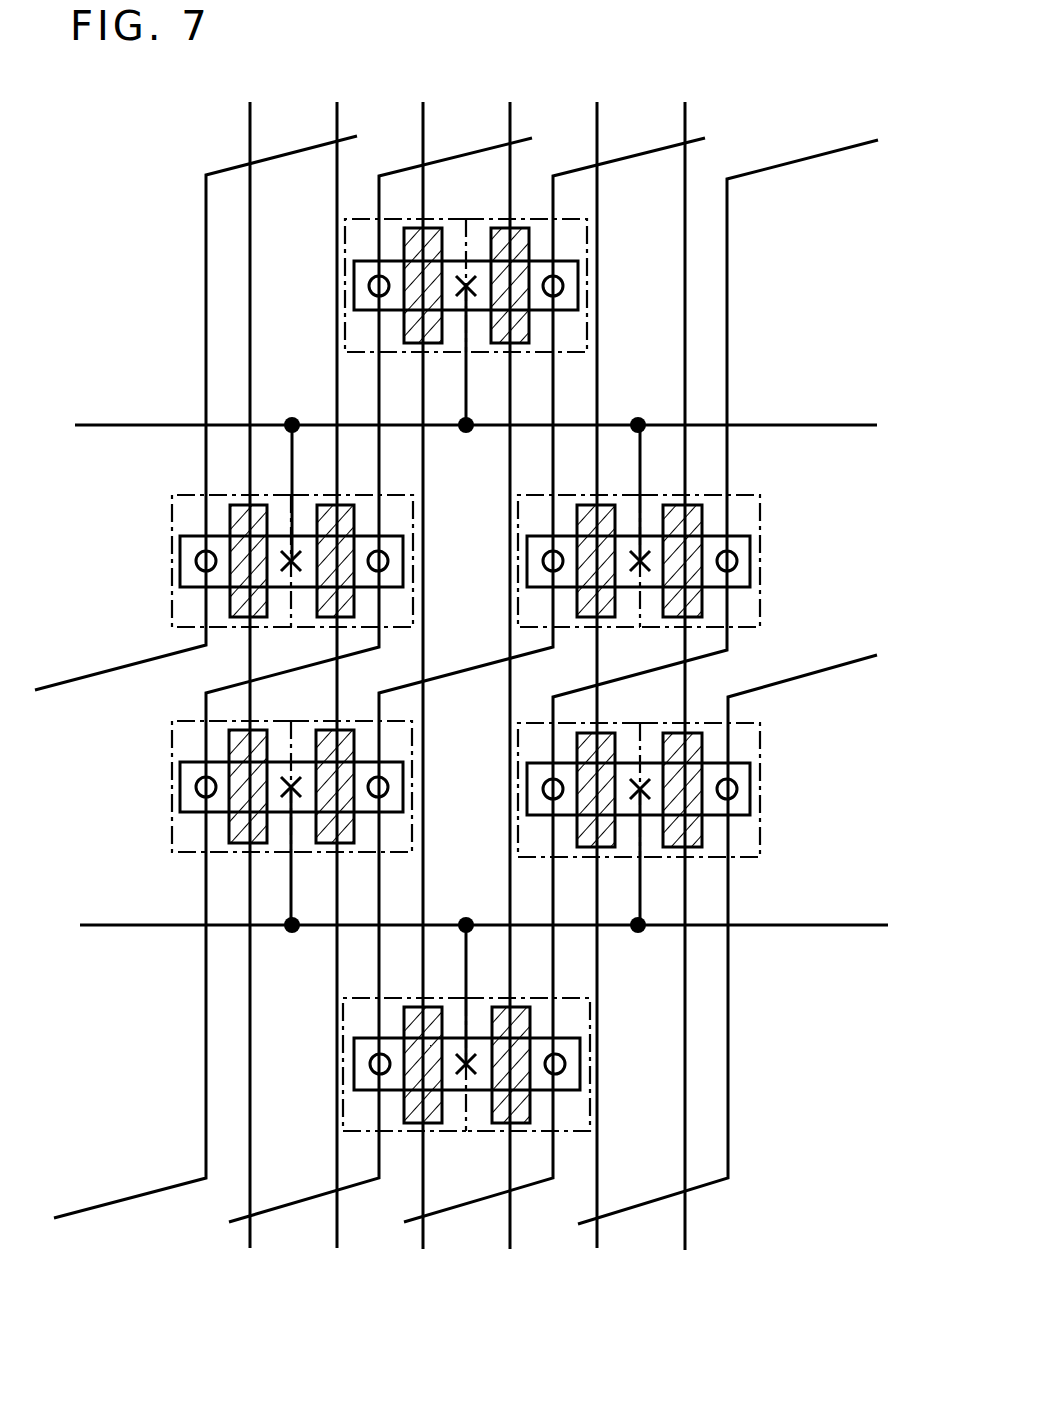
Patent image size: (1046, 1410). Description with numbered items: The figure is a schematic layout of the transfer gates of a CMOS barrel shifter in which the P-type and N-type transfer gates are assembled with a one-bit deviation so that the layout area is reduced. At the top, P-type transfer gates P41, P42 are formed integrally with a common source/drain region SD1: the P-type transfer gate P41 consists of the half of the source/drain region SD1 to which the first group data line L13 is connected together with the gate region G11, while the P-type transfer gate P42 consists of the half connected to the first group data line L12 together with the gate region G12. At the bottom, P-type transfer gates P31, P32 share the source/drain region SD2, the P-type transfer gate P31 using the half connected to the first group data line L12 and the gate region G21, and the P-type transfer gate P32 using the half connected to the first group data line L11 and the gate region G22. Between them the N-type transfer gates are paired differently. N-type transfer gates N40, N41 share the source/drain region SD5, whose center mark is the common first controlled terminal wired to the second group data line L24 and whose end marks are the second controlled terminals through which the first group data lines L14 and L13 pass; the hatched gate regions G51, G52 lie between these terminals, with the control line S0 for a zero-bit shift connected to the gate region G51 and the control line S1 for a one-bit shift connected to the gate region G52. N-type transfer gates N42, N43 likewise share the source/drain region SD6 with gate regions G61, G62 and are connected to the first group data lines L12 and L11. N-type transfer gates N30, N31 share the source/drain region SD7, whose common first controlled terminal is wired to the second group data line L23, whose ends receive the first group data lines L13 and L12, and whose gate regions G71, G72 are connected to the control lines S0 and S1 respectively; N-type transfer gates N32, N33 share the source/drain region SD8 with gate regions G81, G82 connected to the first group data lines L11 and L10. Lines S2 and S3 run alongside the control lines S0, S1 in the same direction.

The control line S0 is at (253, 657).
The control line S1 is at (340, 657).
The signal line S2 is at (598, 657).
The signal line S3 is at (685, 658).
The first group data line L10 is at (626, 1215).
The first group data line L11 is at (445, 1215).
The first group data line L12 is at (266, 1215).
The first group data line L13 is at (81, 1218).
The first group data line L14 is at (57, 692).
The second group data line L23 is at (875, 935).
The second group data line L24 is at (877, 430).
The P-type transfer gate P41 is at (347, 282).
The P-type transfer gate P42 is at (588, 280).
The P-type transfer gate P31 is at (345, 1060).
The P-type transfer gate P32 is at (587, 1050).
The N-type transfer gate N40 is at (172, 620).
The N-type transfer gate N41 is at (413, 528).
The N-type transfer gate N42 is at (518, 547).
The N-type transfer gate N43 is at (760, 528).
The N-type transfer gate N30 is at (172, 842).
The N-type transfer gate N31 is at (412, 752).
The N-type transfer gate N32 is at (518, 803).
The N-type transfer gate N33 is at (760, 787).
The source/drain region SD1 is at (578, 297).
The source/drain region SD2 is at (580, 1076).
The source/drain region SD5 is at (180, 567).
The source/drain region SD6 is at (750, 562).
The source/drain region SD7 is at (180, 792).
The source/drain region SD8 is at (750, 805).
The gate region G11 is at (405, 337).
The gate region G12 is at (528, 325).
The gate region G21 is at (404, 1111).
The gate region G22 is at (530, 1107).
The gate region G51 is at (230, 515).
The gate region G52 is at (317, 602).
The gate region G61 is at (577, 623).
The gate region G62 is at (663, 608).
The gate region G71 is at (232, 828).
The gate region G72 is at (353, 828).
The gate region G81 is at (577, 828).
The gate region G82 is at (702, 830).